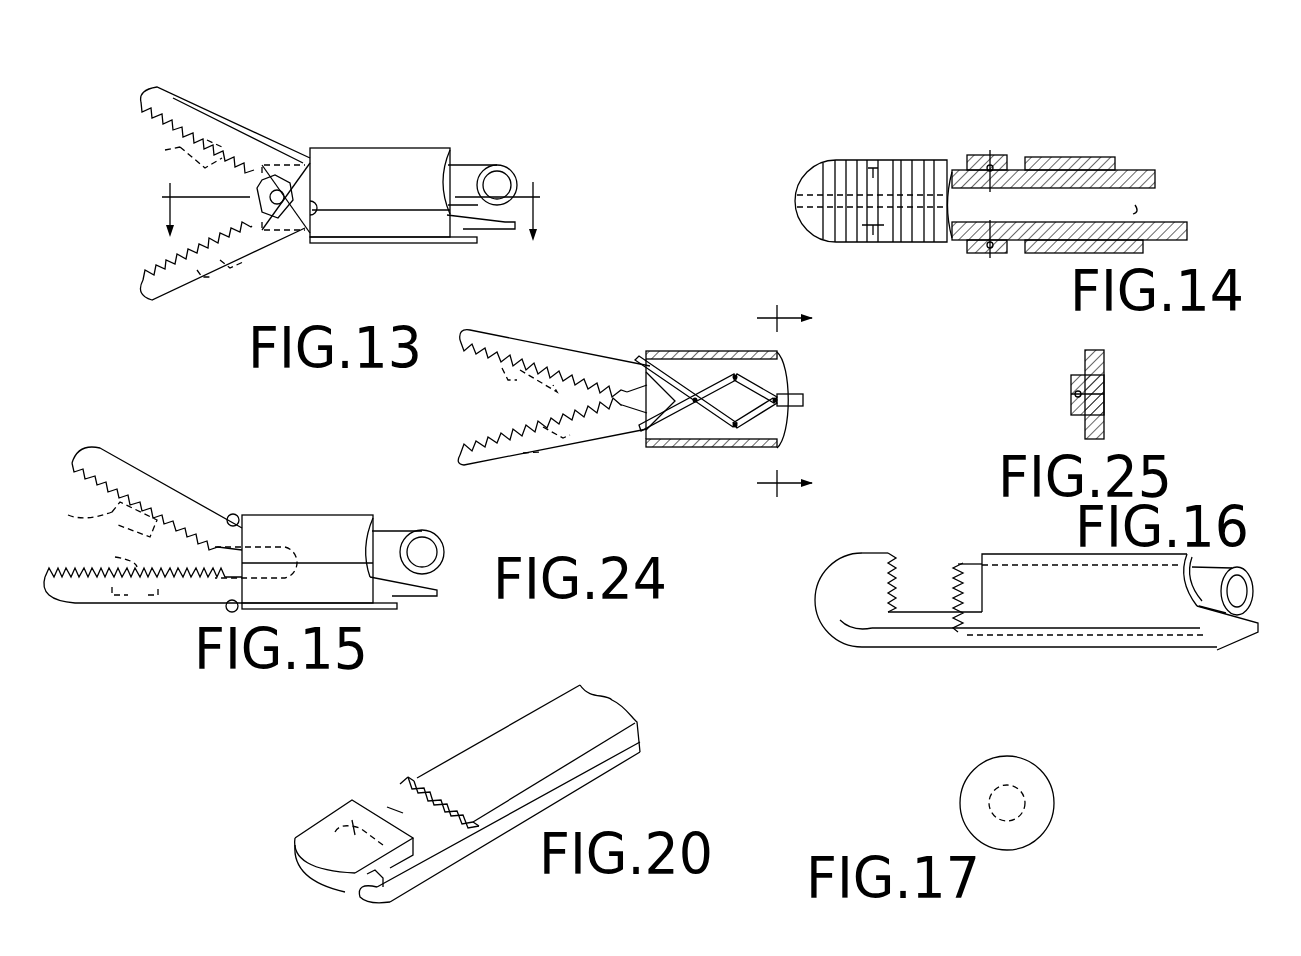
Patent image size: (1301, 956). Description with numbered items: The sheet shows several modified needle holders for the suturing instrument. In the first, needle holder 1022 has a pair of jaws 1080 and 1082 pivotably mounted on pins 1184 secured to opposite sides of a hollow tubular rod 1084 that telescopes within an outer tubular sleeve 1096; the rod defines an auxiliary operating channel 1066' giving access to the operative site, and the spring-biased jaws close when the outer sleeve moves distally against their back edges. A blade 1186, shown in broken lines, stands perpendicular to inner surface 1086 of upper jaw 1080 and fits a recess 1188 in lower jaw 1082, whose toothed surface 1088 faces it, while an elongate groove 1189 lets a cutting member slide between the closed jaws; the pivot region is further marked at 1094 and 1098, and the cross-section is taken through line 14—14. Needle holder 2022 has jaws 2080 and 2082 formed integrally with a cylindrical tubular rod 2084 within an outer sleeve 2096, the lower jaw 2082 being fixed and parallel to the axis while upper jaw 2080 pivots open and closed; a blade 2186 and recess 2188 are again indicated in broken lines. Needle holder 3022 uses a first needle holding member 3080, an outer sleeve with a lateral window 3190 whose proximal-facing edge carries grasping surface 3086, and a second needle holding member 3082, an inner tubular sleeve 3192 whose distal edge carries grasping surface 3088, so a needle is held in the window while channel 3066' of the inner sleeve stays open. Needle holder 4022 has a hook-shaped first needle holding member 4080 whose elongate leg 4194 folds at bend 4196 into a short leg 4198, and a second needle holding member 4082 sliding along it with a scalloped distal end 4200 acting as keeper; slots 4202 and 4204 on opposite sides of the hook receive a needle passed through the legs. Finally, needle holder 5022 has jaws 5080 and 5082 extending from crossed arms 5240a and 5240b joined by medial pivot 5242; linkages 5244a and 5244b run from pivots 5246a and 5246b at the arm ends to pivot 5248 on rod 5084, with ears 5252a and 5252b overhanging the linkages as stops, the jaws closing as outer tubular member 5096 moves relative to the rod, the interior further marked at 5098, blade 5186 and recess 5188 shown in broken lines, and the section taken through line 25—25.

In FIG. 13, the needle holder 1022 is at (322, 118).
In FIG. 14, the needle holder 1022 is at (1050, 133).
In FIG. 13, the upper jaw 1080 is at (154, 82).
In FIG. 13, the lower jaw 1082 is at (162, 306).
In FIG. 14, the lower jaw 1082 is at (810, 241).
In FIG. 13, the hollow tubular rod 1084 is at (485, 160).
In FIG. 14, the hollow tubular rod 1084 is at (1140, 170).
In FIG. 13, the inner surface 1086 is at (152, 122).
In FIG. 13, the second jaw teeth 1088 is at (183, 258).
In FIG. 14, the second jaw teeth 1088 is at (822, 180).
In FIG. 13, the jaw pivot housing 1094 is at (297, 142).
In FIG. 13, the outer tubular sleeve 1096 is at (391, 148).
In FIG. 14, the outer tubular sleeve 1096 is at (1067, 158).
In FIG. 13, the pivot hole 1098 is at (318, 216).
In FIG. 13, the pins 1184 is at (292, 198).
In FIG. 14, the pins 1184 is at (990, 152).
In FIG. 13, the blade 1186 is at (195, 172).
In FIG. 13, the recess 1188 is at (230, 280).
In FIG. 14, the recess 1188 is at (893, 245).
In FIG. 14, the elongate groove 1189 is at (889, 187).
In FIG. 14, the auxiliary operating channel 1066' is at (1207, 222).
In FIG. 13, the section line 14— 14 is at (349, 211).
In FIG. 15, the needle holder 2022 is at (212, 492).
In FIG. 15, the upper jaw 2080 is at (145, 462).
In FIG. 15, the lower jaw 2082 is at (168, 604).
In FIG. 15, the hollow tubular rod 2084 is at (405, 533).
In FIG. 15, the clevis body 2096 is at (287, 515).
In FIG. 15, the first jaw insert 2186 is at (90, 520).
In FIG. 15, the second jaw insert 2188 is at (137, 557).
In FIG. 24, the end effector assembly 5022 is at (563, 300).
In FIG. 24, the first jaw 5080 is at (528, 326).
In FIG. 24, the second jaw 5082 is at (527, 462).
In FIG. 24, the actuator cap 5084 is at (805, 393).
In FIG. 24, the clevis tube 5096 is at (658, 350).
In FIG. 24, the jaw wedge 5098 is at (644, 438).
In FIG. 24, the first jaw insert 5186 is at (510, 372).
In FIG. 24, the second jaw insert 5188 is at (530, 421).
In FIG. 24, the first jaw arm 5240a is at (655, 365).
In FIG. 24, the second jaw arm 5240b is at (665, 430).
In FIG. 24, the central pivot pin 5242 is at (696, 405).
In FIG. 24, the first link pin 5244a is at (745, 378).
In FIG. 25, the first link pin 5244a is at (1105, 404).
In FIG. 24, the second link pin 5244b is at (738, 430).
In FIG. 25, the second link pin 5244b is at (1068, 404).
In FIG. 24, the first link 5246a is at (736, 376).
In FIG. 24, the second link 5246b is at (735, 430).
In FIG. 24, the actuator rod 5248 is at (803, 401).
In FIG. 25, the actuator rod 5248 is at (1105, 394).
In FIG. 24, the first rod pin 5252a is at (800, 395).
In FIG. 25, the first rod pin 5252a is at (1105, 352).
In FIG. 24, the second rod pin 5252b is at (790, 410).
In FIG. 25, the second rod pin 5252b is at (1070, 430).
In FIG. 24, the section line 25— 25 is at (813, 401).
In FIG. 16, the needle holder 3022 is at (810, 630).
In FIG. 17, the needle holder 3022 is at (940, 830).
In FIG. 16, the hook jaw 3080 is at (821, 565).
In FIG. 17, the hook jaw 3080 is at (960, 790).
In FIG. 16, the shaft body 3082 is at (1040, 640).
In FIG. 16, the grasping surface 3086 is at (913, 570).
In FIG. 16, the grasping surface 3088 is at (955, 590).
In FIG. 16, the window 3190 is at (973, 586).
In FIG. 16, the inner tubular sleeve 3192 is at (1145, 632).
In FIG. 17, the inner lumen 3066' is at (1065, 834).
In FIG. 20, the needle holder 4022 is at (283, 835).
In FIG. 20, the first needle holding member 4080 is at (320, 882).
In FIG. 20, the second needle holding member 4082 is at (518, 710).
In FIG. 20, the elongate leg 4194 is at (624, 758).
In FIG. 20, the bend 4196 is at (293, 845).
In FIG. 20, the short leg 4198 is at (307, 827).
In FIG. 20, the distal end 4200 is at (413, 780).
In FIG. 20, the slotted opening 4202 is at (362, 800).
In FIG. 20, the slotted opening 4204 is at (395, 890).